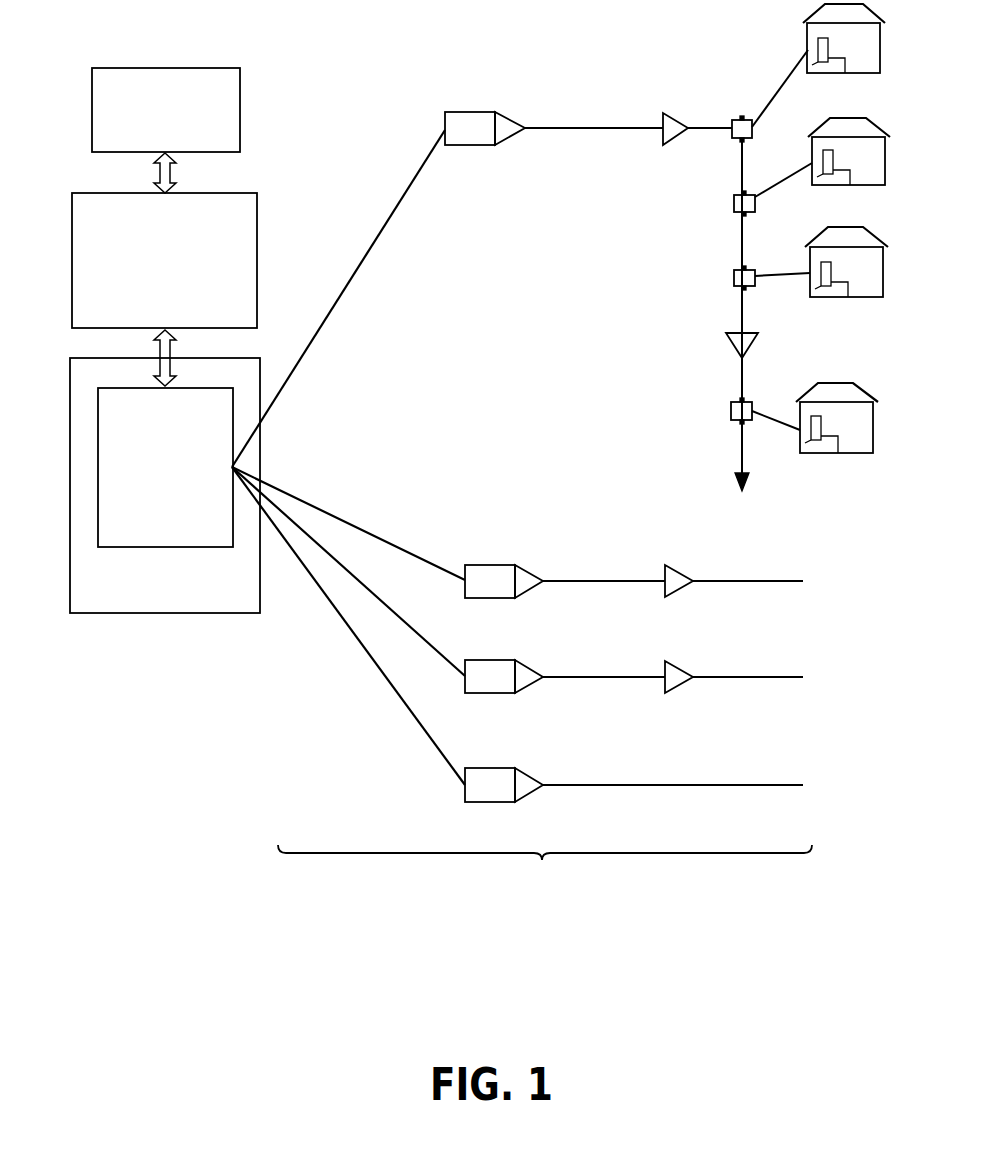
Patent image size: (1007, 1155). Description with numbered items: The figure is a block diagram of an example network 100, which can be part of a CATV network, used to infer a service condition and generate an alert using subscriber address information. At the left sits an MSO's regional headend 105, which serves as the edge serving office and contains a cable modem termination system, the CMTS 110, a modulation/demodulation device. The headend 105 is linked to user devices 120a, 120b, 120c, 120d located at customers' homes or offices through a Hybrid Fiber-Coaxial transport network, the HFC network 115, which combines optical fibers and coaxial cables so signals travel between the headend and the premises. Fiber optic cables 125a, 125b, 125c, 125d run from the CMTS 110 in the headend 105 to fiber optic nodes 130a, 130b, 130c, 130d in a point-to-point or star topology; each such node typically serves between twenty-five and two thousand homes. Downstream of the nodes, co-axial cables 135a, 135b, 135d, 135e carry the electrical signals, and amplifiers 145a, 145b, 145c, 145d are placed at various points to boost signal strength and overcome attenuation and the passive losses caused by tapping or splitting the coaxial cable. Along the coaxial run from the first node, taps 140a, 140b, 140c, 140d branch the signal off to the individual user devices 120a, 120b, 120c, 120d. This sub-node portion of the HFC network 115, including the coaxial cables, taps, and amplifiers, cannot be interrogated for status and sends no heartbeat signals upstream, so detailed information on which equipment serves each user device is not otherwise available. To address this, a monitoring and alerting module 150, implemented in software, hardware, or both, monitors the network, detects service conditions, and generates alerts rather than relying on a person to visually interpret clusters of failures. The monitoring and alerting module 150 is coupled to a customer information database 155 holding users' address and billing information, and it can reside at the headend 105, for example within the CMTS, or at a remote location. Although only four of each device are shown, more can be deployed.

The network 100 is at (763, 964).
The headend 105 is at (132, 620).
The cable modem termination system (CMTS) 110 is at (117, 402).
The HFC network 115 is at (518, 895).
The user device 120a is at (822, 40).
The user device 120b is at (833, 155).
The user device 120c is at (822, 262).
The user device 120d is at (820, 428).
The fiber optic cable 125a is at (358, 315).
The fiber optic cable 125b is at (360, 492).
The fiber optic cable 125c is at (368, 597).
The fiber optic cable 125d is at (395, 693).
The fiber optic node 130a is at (470, 105).
The fiber optic node 130b is at (490, 563).
The fiber optic node 130c is at (500, 658).
The fiber optic node 130d is at (518, 765).
The co-axial cable 135a is at (582, 172).
The co-axial cable 135b is at (607, 555).
The co-axial cable 135d is at (607, 651).
The co-axial cable 135e is at (615, 758).
The tap 140a is at (740, 118).
The tap 140b is at (735, 213).
The tap 140c is at (732, 286).
The tap 140d is at (730, 420).
The amplifier 145a is at (670, 118).
The amplifier 145b is at (732, 352).
The amplifier 145c is at (683, 568).
The amplifier 145d is at (683, 665).
The monitoring and alerting module 150 is at (247, 203).
The customer information database 155 is at (217, 70).